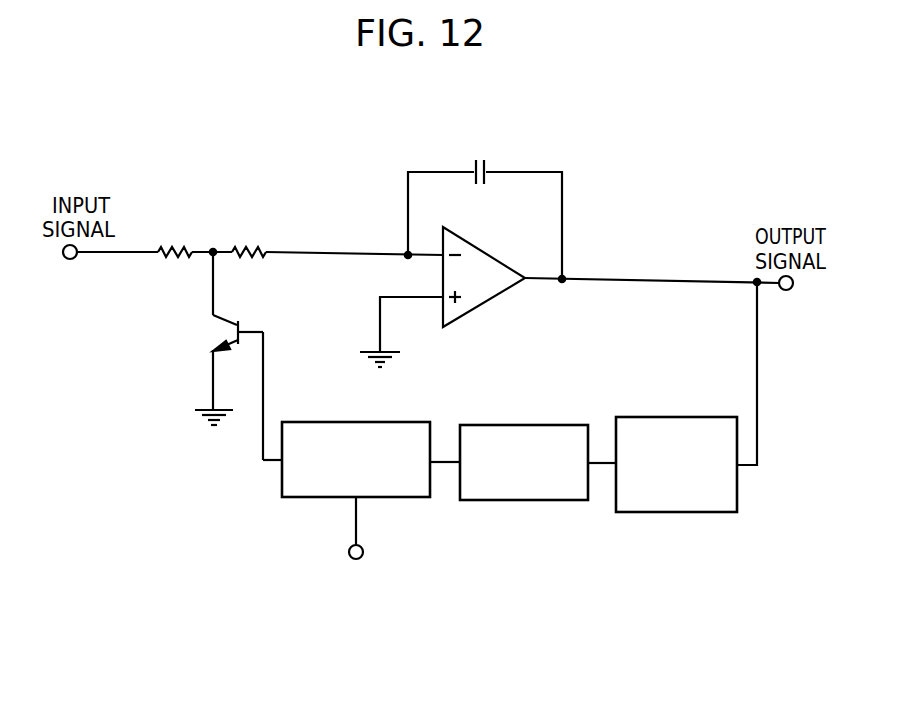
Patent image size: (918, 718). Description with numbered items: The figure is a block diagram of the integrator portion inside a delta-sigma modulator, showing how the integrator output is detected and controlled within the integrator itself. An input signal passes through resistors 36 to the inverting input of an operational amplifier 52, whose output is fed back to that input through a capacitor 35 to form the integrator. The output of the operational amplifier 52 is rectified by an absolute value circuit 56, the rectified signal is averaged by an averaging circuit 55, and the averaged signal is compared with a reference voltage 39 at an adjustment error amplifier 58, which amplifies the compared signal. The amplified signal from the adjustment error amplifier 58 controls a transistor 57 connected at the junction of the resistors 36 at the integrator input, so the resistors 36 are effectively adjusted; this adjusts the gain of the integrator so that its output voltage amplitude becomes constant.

The capacitor 35 is at (481, 158).
The resistors 36 is at (237, 243).
The reference voltage 39 is at (356, 560).
The operational amplifier 52 is at (490, 303).
The averaging circuit 55 is at (540, 505).
The absolute value circuit 56 is at (697, 515).
The transistor 57 is at (211, 330).
The adjustment error amplifier 58 is at (407, 500).